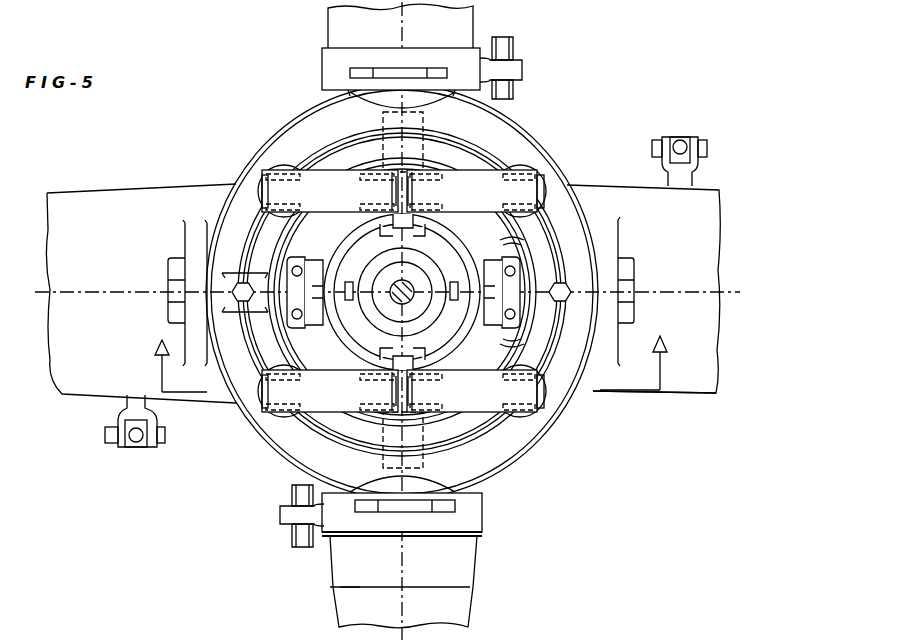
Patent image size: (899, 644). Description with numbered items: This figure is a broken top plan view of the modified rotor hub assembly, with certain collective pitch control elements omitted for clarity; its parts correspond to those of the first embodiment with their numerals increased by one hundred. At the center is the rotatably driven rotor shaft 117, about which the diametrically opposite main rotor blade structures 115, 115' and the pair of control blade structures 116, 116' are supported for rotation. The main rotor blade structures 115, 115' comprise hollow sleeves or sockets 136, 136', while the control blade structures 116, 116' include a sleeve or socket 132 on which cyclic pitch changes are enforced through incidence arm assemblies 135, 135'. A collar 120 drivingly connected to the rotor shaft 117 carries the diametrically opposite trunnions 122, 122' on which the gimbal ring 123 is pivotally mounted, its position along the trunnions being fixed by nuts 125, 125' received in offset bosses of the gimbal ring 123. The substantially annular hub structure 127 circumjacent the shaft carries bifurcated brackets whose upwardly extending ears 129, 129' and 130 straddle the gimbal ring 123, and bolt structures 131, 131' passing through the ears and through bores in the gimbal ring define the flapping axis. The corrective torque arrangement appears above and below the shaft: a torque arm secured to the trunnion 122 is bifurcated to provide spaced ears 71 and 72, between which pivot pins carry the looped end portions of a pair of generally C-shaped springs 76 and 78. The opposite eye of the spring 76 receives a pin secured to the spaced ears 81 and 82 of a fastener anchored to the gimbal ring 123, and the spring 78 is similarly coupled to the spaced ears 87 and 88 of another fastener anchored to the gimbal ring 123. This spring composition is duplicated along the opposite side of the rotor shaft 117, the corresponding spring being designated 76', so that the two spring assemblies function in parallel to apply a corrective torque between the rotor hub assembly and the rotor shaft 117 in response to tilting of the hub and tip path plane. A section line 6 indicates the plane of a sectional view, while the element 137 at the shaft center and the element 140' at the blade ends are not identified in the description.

The section line 6 is at (421, 356).
The ear 71 is at (366, 412).
The ear 72 is at (310, 412).
The C-shaped spring 76 is at (513, 409).
The C-shaped spring 76' is at (476, 183).
The C-shaped spring 78 is at (330, 188).
The ear 81 is at (546, 400).
The ear 82 is at (540, 378).
The ear 87 is at (282, 409).
The ear 88 is at (270, 384).
The main rotor blade structure 115 is at (670, 289).
The main rotor blade structure 115' is at (124, 282).
The control blade structure 116 is at (430, 561).
The control blade structure 116' is at (378, 26).
The rotor shaft 117 is at (381, 262).
The collar 120 is at (437, 332).
The trunnion 122 is at (402, 313).
The trunnion 122' is at (435, 142).
The gimbal ring 123 is at (490, 462).
The nut 125 is at (425, 514).
The nut 125' is at (423, 50).
The hub structure 127 is at (506, 243).
The ear 129 is at (641, 291).
The ear 129' is at (188, 263).
The ear 130 is at (520, 330).
The bolt structure 131 is at (620, 290).
The bolt structure 131' is at (183, 275).
The sleeve or socket 132 is at (470, 613).
The incidence arm assembly 135 is at (276, 526).
The incidence arm assembly 135' is at (530, 68).
The hollow sleeve or socket 136 is at (654, 415).
The hollow sleeve or socket 136' is at (141, 165).
The shaft 137 is at (408, 286).
The clevis 140' is at (412, 288).